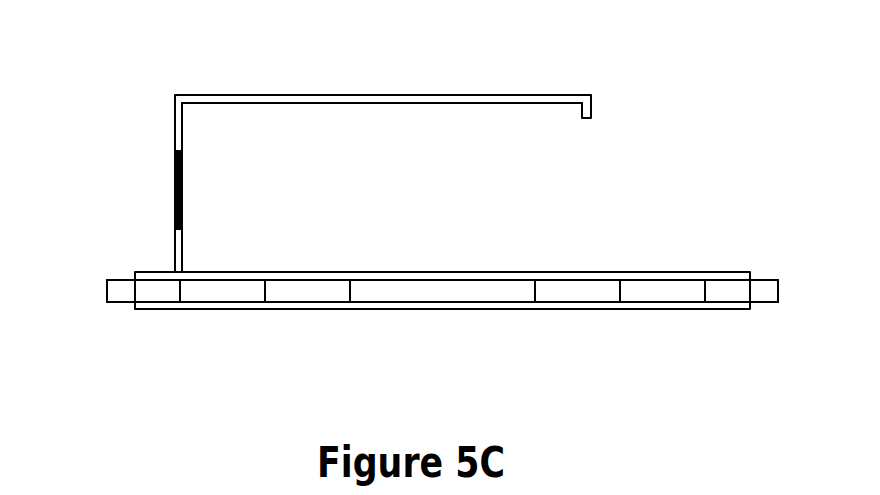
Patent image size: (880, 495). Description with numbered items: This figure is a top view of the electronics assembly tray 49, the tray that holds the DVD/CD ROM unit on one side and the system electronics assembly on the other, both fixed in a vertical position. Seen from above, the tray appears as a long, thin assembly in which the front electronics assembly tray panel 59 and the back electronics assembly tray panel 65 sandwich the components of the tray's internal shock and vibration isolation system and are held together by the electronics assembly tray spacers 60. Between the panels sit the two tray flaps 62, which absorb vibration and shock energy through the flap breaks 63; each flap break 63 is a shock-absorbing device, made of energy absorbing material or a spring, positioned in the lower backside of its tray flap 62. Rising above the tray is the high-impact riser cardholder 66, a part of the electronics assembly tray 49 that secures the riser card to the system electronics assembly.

The electronics assembly tray component 49 is at (322, 84).
The high-impact riser cardholder 66 is at (382, 108).
The front electronics assembly tray panel 59 is at (548, 267).
The back electronics assembly tray panel 65 is at (437, 310).
The tray flap 62 is at (117, 291).
The electronics assembly tray spacer 60 is at (213, 290).
The flap break 63 is at (310, 292).